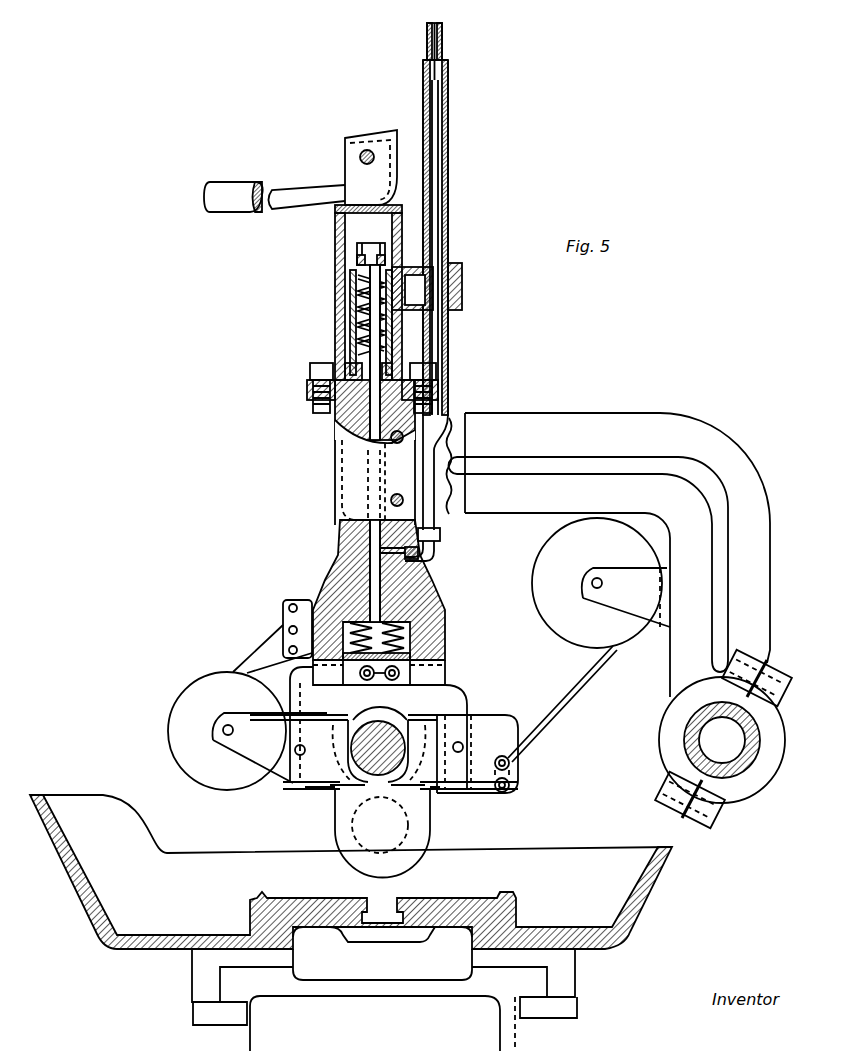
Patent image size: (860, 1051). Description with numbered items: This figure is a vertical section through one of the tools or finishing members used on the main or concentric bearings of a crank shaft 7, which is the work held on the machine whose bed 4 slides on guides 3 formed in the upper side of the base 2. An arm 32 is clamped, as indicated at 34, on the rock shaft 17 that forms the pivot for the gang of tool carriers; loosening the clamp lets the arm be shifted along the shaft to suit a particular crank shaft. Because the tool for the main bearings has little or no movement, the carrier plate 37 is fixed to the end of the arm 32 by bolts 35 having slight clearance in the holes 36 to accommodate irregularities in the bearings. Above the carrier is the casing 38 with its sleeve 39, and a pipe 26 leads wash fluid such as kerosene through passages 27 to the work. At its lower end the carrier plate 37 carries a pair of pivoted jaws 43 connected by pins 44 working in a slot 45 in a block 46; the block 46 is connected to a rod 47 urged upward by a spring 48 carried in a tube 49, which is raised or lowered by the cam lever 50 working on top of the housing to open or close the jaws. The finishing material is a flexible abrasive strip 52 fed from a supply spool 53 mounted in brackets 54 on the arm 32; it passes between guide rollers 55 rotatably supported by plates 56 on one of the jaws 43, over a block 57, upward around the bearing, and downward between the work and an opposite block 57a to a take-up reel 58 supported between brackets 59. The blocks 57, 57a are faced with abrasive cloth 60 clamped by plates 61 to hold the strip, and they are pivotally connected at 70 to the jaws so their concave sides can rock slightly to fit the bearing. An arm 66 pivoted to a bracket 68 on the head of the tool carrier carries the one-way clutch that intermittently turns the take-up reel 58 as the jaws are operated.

The base 2 is at (382, 1023).
The guides 3 is at (190, 1008).
The bed 4 is at (351, 887).
The crank shaft 7 is at (415, 800).
The rock shaft 17 is at (688, 733).
The pipes 26 is at (448, 329).
The passages 27 is at (360, 572).
The arm 32 is at (722, 455).
The clamp 34 is at (746, 788).
The bolts 35 is at (403, 436).
The holes 36 is at (397, 444).
The carrier plate 37 is at (345, 523).
The casing 38 is at (335, 297).
The sleeve 39 is at (450, 209).
The pivoted jaws 43 is at (470, 689).
The pins 44 is at (415, 670).
The slot 45 is at (382, 682).
The block 46 is at (443, 640).
The rod 47 is at (345, 428).
The spring 48 is at (357, 338).
The tube 49 is at (345, 251).
The cam lever 50 is at (298, 188).
The strip 52 is at (590, 690).
The supply spool 53 is at (533, 567).
The brackets 54 is at (626, 597).
The guide rollers 55 is at (511, 785).
The plates 56 is at (487, 721).
The block 57 is at (427, 735).
The opposite block 57a is at (320, 787).
The take-up reel 58 is at (174, 717).
The brackets 59 is at (269, 748).
The abrasive cloth 60 is at (307, 790).
The plates 61 is at (372, 812).
The arm 66 is at (258, 649).
The bracket 68 is at (283, 608).
The pivotal connection 70 is at (465, 747).